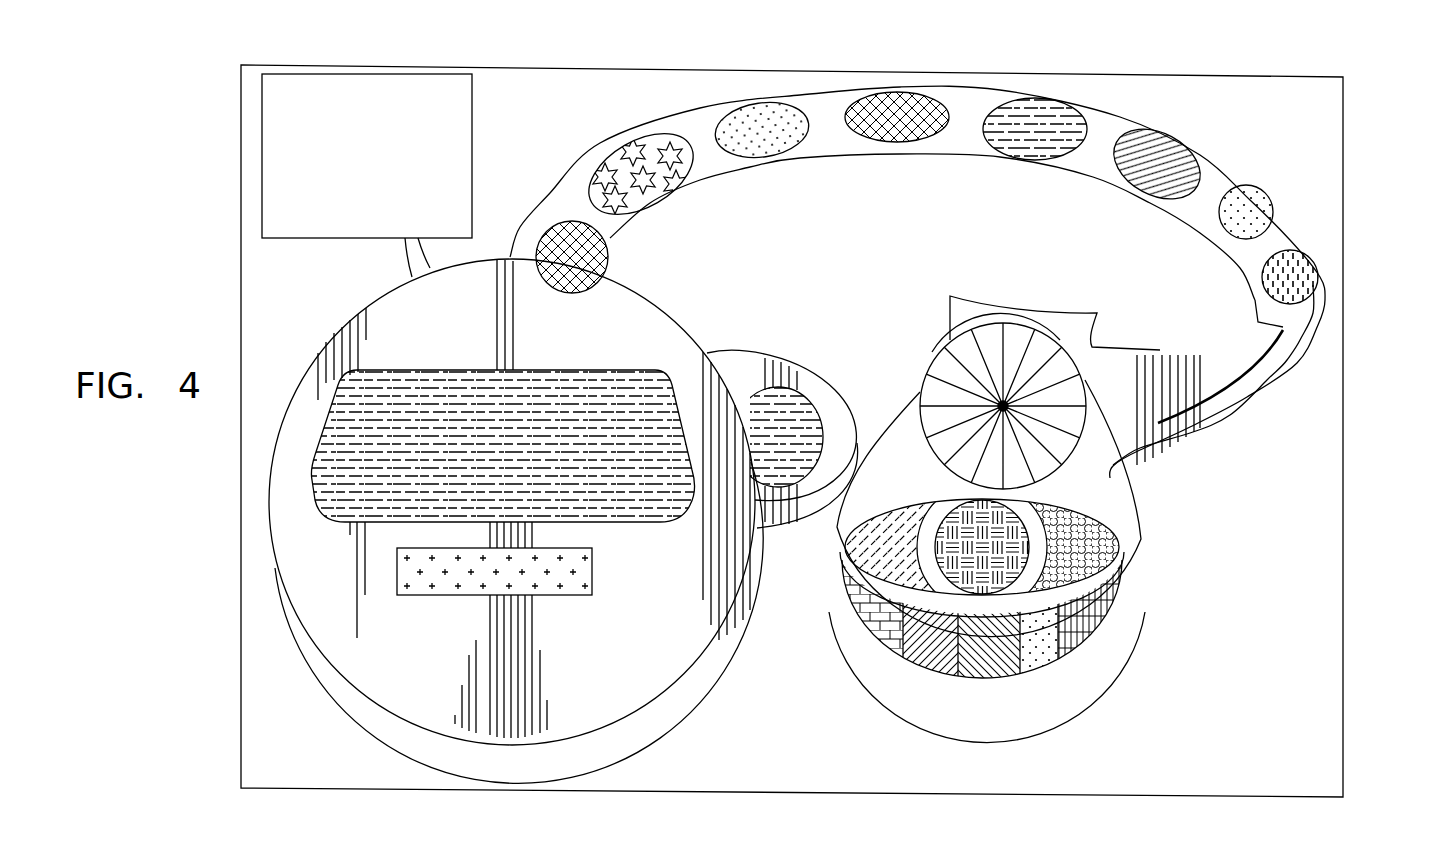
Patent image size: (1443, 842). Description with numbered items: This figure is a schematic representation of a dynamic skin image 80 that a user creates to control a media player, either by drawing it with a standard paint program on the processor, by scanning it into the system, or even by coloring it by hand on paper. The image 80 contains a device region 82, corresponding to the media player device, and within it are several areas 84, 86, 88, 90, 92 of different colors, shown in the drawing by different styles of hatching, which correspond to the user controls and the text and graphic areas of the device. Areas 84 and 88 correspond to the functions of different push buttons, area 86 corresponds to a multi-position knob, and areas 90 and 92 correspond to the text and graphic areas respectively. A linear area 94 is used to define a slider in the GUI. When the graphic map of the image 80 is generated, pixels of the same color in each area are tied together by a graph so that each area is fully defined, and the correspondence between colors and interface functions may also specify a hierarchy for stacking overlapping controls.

The dynamic skin image 80 is at (1253, 77).
The device region 82 is at (1313, 337).
The area 84 is at (1038, 652).
The area 86 is at (923, 395).
The area 88 is at (782, 117).
The area 90 is at (441, 405).
The area 92 is at (265, 141).
The linear area 94 is at (1245, 380).